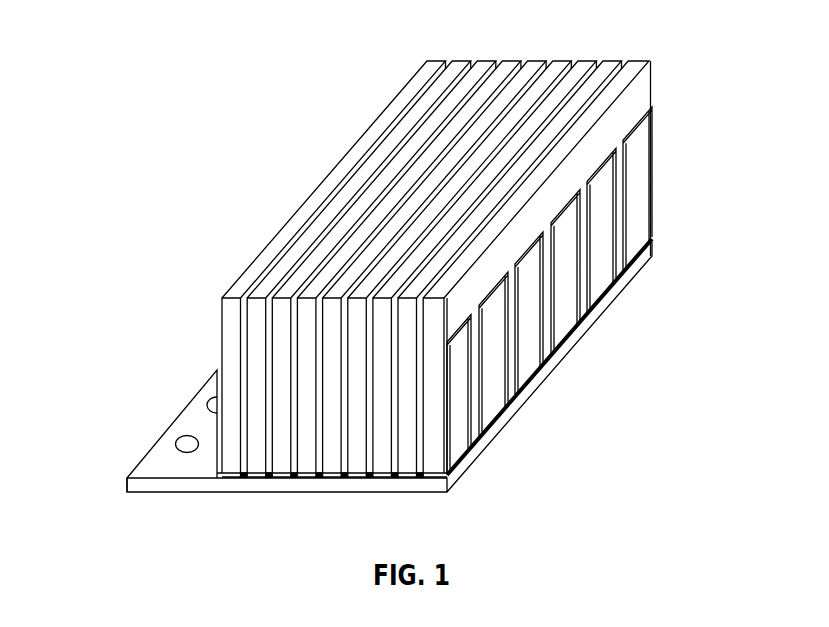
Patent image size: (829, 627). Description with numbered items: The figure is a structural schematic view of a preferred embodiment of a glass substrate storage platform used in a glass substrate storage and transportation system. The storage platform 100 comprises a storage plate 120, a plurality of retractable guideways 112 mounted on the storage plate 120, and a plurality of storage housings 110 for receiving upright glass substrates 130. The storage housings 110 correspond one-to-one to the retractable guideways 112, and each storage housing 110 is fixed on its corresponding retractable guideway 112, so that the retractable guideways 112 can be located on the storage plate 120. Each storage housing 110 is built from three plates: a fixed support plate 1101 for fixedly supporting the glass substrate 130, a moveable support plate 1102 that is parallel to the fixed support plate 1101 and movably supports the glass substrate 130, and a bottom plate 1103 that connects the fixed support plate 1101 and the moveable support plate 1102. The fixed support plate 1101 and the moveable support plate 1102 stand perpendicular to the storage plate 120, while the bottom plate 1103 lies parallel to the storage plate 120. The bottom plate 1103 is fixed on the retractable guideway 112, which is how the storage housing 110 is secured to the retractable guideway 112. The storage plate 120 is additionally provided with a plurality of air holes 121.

The storage platform 100 is at (230, 100).
The storage housing 110 is at (647, 373).
The fixed support plate 1101 is at (421, 438).
The moveable support plate 1102 is at (458, 375).
The bottom plate 1103 is at (445, 477).
The storage plate 120 is at (162, 457).
The air hole 121 is at (180, 442).
The retractable guideway 112 is at (127, 482).
The glass substrate 130 is at (260, 260).